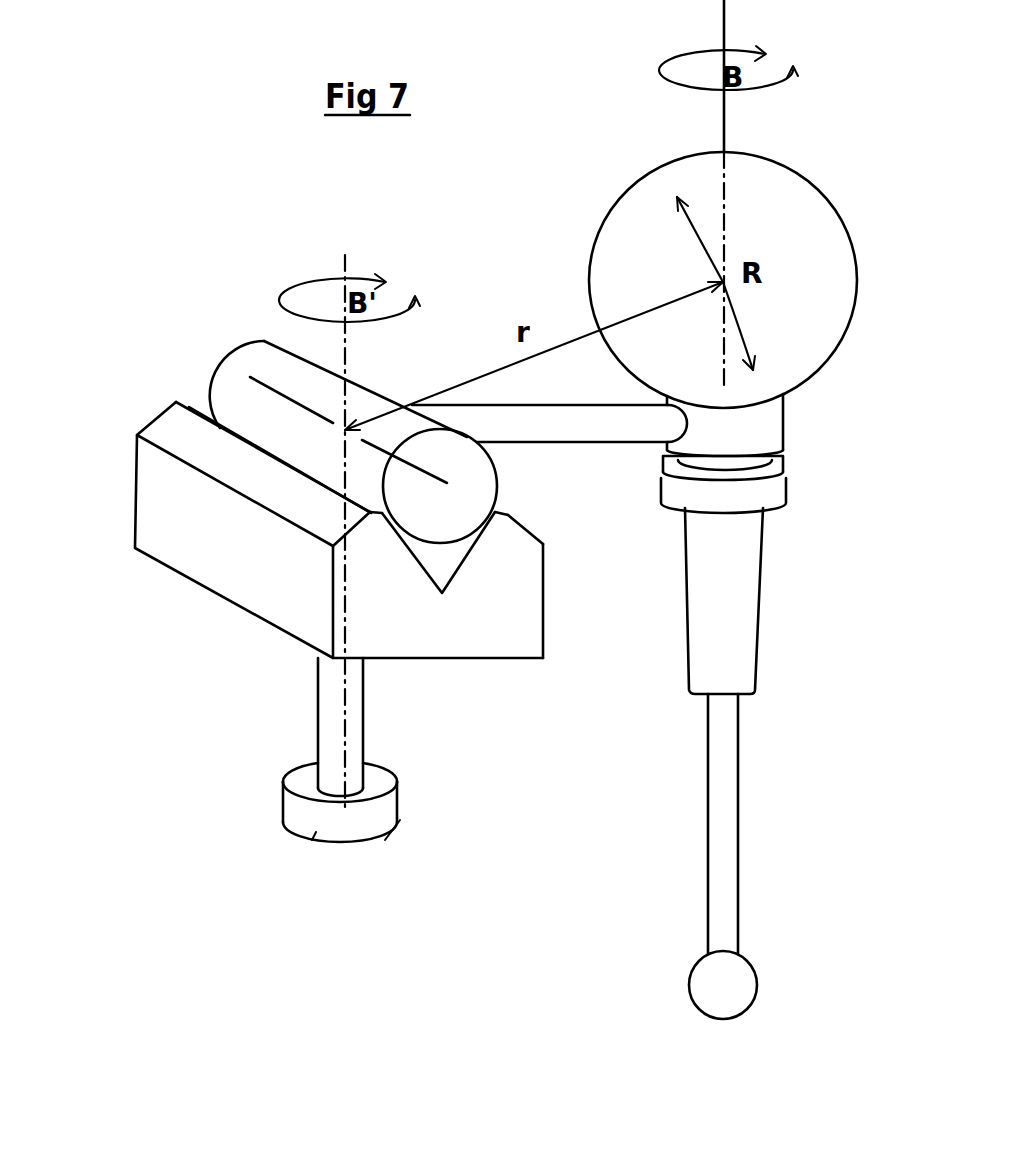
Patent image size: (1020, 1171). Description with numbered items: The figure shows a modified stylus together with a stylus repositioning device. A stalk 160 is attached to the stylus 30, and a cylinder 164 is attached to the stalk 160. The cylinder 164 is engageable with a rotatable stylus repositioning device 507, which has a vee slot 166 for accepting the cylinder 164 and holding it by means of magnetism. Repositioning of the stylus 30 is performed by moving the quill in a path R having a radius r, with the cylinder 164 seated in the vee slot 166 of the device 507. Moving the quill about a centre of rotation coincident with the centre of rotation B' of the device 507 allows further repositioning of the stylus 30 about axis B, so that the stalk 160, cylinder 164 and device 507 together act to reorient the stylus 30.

The stylus 30 is at (730, 610).
The stalk 160 is at (558, 423).
The cylinder 164 is at (235, 392).
The V groove 166 is at (450, 555).
The rotatable stylus repositioning device 507 is at (213, 570).